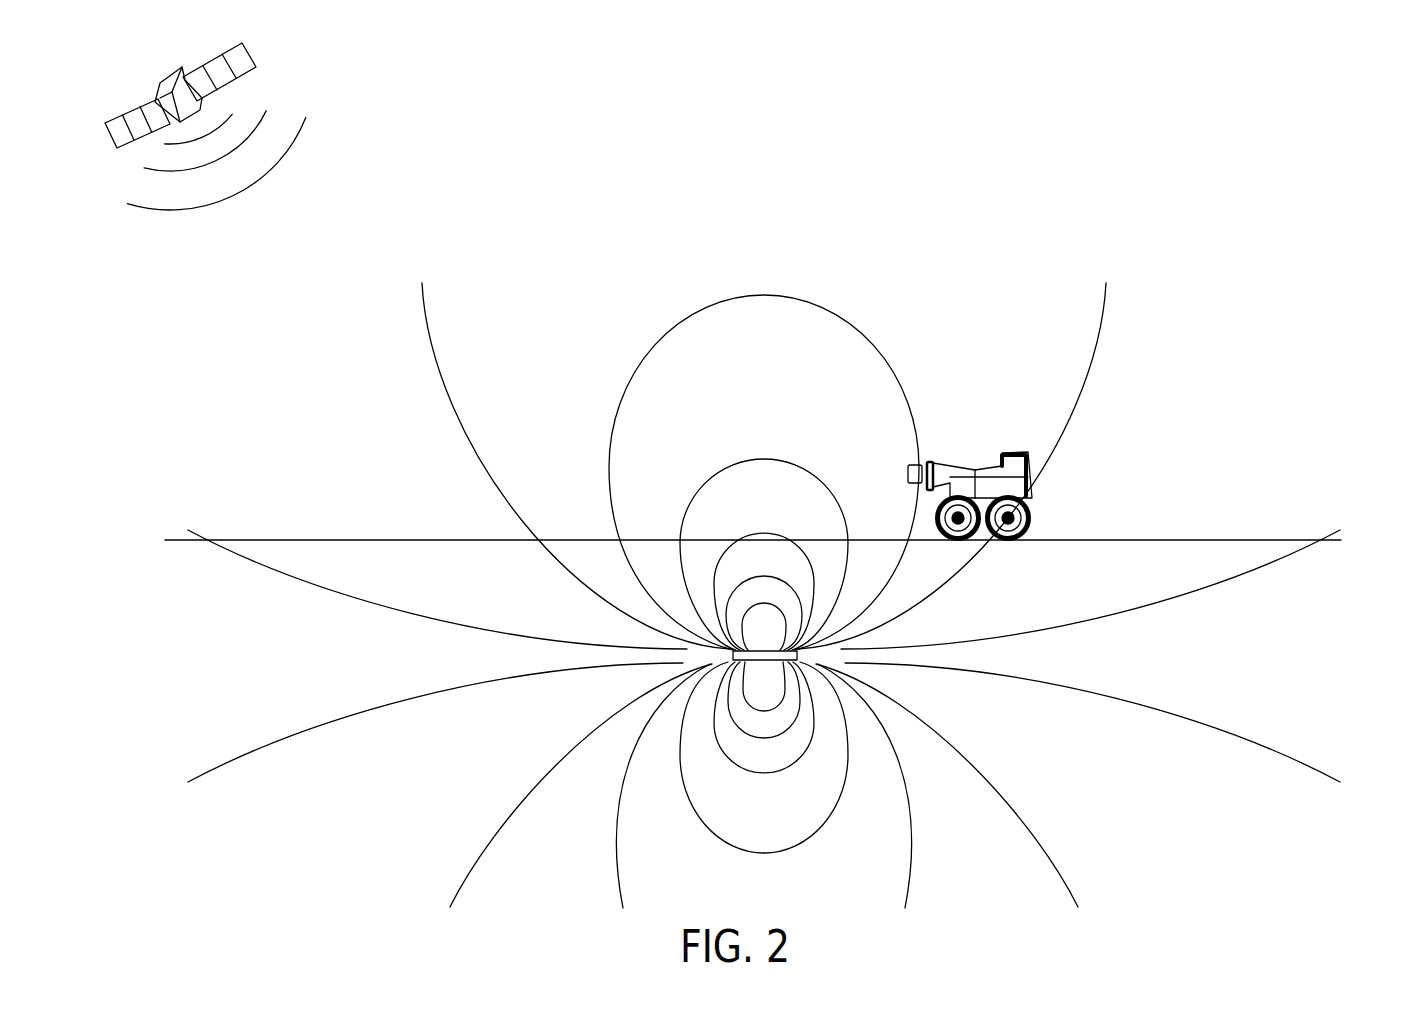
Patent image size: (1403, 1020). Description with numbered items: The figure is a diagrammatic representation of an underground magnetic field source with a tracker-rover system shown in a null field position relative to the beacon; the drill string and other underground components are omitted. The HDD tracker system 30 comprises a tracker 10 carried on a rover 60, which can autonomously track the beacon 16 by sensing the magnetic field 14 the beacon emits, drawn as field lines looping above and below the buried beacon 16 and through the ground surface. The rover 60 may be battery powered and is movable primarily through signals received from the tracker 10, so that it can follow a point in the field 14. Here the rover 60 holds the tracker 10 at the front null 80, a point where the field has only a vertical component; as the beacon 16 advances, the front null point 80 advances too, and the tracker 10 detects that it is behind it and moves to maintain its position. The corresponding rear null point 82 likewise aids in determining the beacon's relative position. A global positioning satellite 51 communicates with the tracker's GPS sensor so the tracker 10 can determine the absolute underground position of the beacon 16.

The tracker 10 is at (1031, 427).
The magnetic field 14 is at (775, 431).
The beacon 16 is at (670, 488).
The HDD tracker system 30 is at (952, 401).
The global positioning satellite 51 is at (247, 126).
The rover 60 is at (1047, 498).
The front null point 80 is at (973, 402).
The rear null point 82 is at (712, 472).